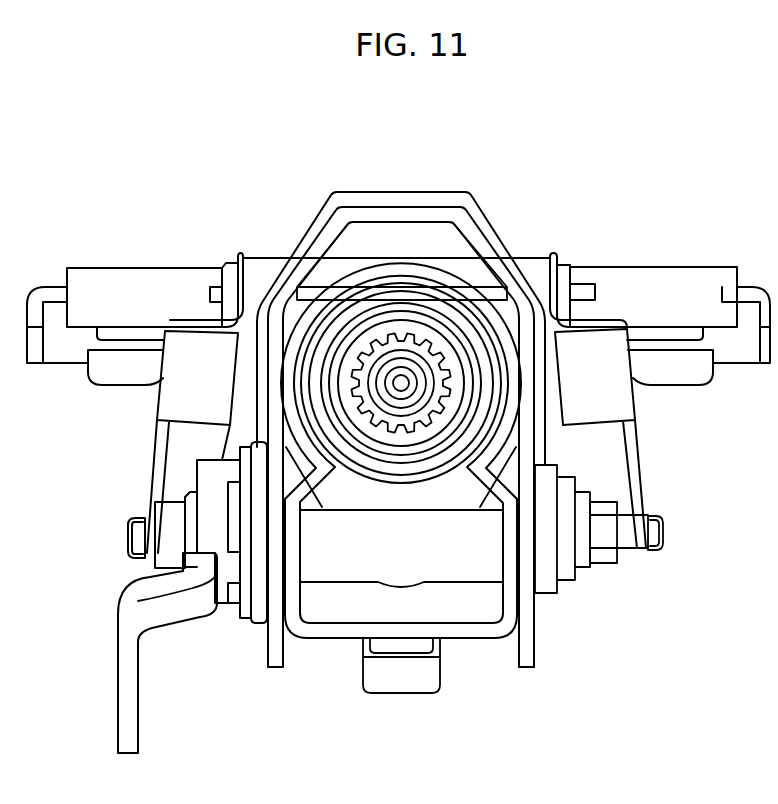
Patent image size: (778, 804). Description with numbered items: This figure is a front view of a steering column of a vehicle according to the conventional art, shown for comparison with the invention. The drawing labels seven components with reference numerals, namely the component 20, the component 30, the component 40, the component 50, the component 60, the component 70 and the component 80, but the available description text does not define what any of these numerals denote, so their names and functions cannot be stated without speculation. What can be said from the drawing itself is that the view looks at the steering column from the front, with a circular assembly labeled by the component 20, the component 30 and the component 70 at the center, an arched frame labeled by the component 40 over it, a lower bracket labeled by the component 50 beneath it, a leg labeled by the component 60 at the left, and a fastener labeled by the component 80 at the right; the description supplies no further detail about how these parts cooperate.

The motor 20 is at (473, 337).
The motor housing 30 is at (488, 428).
The frame bracket 40 is at (393, 213).
The support bracket 50 is at (475, 630).
The mounting leg 60 is at (127, 693).
The gear 70 is at (433, 418).
The fastening bolt 80 is at (627, 545).